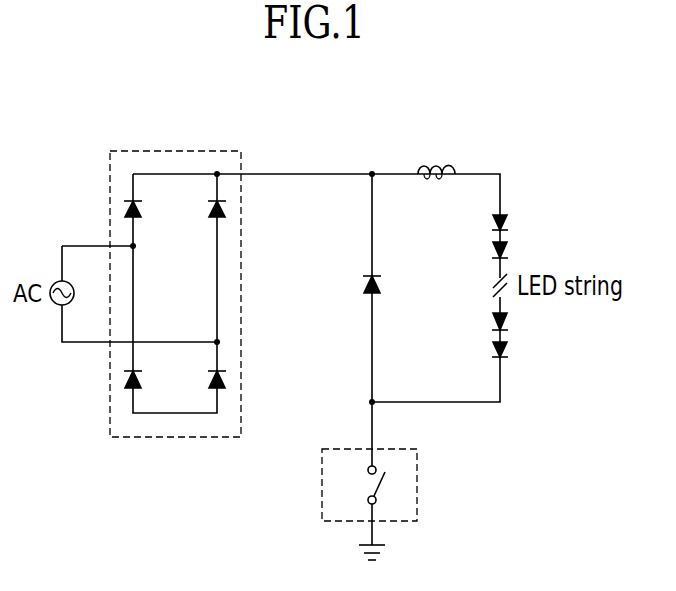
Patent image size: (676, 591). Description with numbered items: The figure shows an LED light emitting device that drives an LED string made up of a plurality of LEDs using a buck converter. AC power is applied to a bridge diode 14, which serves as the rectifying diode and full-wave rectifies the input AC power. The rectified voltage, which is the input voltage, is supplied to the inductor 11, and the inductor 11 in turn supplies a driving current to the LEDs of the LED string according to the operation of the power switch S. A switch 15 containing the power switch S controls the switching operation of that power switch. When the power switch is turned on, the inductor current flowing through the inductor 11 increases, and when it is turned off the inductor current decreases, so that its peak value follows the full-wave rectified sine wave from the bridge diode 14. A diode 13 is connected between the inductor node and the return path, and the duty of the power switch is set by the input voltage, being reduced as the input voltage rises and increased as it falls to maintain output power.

The inductor 11 is at (439, 165).
The diode 13 is at (378, 275).
The bridge diode 14 is at (241, 282).
The switch 15 is at (322, 485).